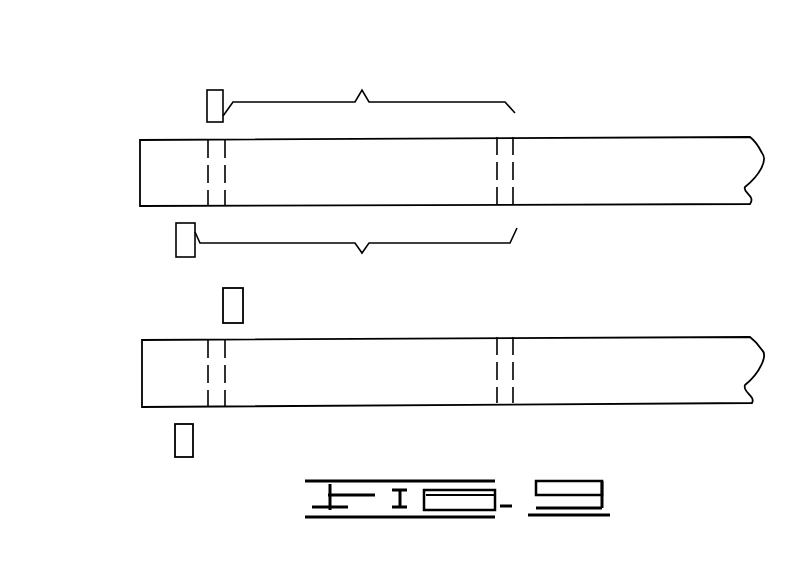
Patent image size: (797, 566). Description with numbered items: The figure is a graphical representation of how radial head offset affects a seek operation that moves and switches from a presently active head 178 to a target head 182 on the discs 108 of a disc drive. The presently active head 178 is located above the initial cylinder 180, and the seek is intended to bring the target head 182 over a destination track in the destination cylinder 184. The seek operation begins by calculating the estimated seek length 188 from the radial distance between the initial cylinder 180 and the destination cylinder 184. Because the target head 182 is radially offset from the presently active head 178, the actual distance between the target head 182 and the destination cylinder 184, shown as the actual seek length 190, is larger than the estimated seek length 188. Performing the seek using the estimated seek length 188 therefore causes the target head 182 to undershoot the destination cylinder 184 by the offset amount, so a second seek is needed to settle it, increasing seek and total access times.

The disc 108 is at (140, 172).
The presently active head 178 is at (213, 90).
The initial cylinder 180 is at (208, 173).
The target head 182 is at (176, 233).
The destination cylinder 184 is at (513, 170).
The estimated seek length 188 is at (335, 102).
The actual seek length 190 is at (410, 243).